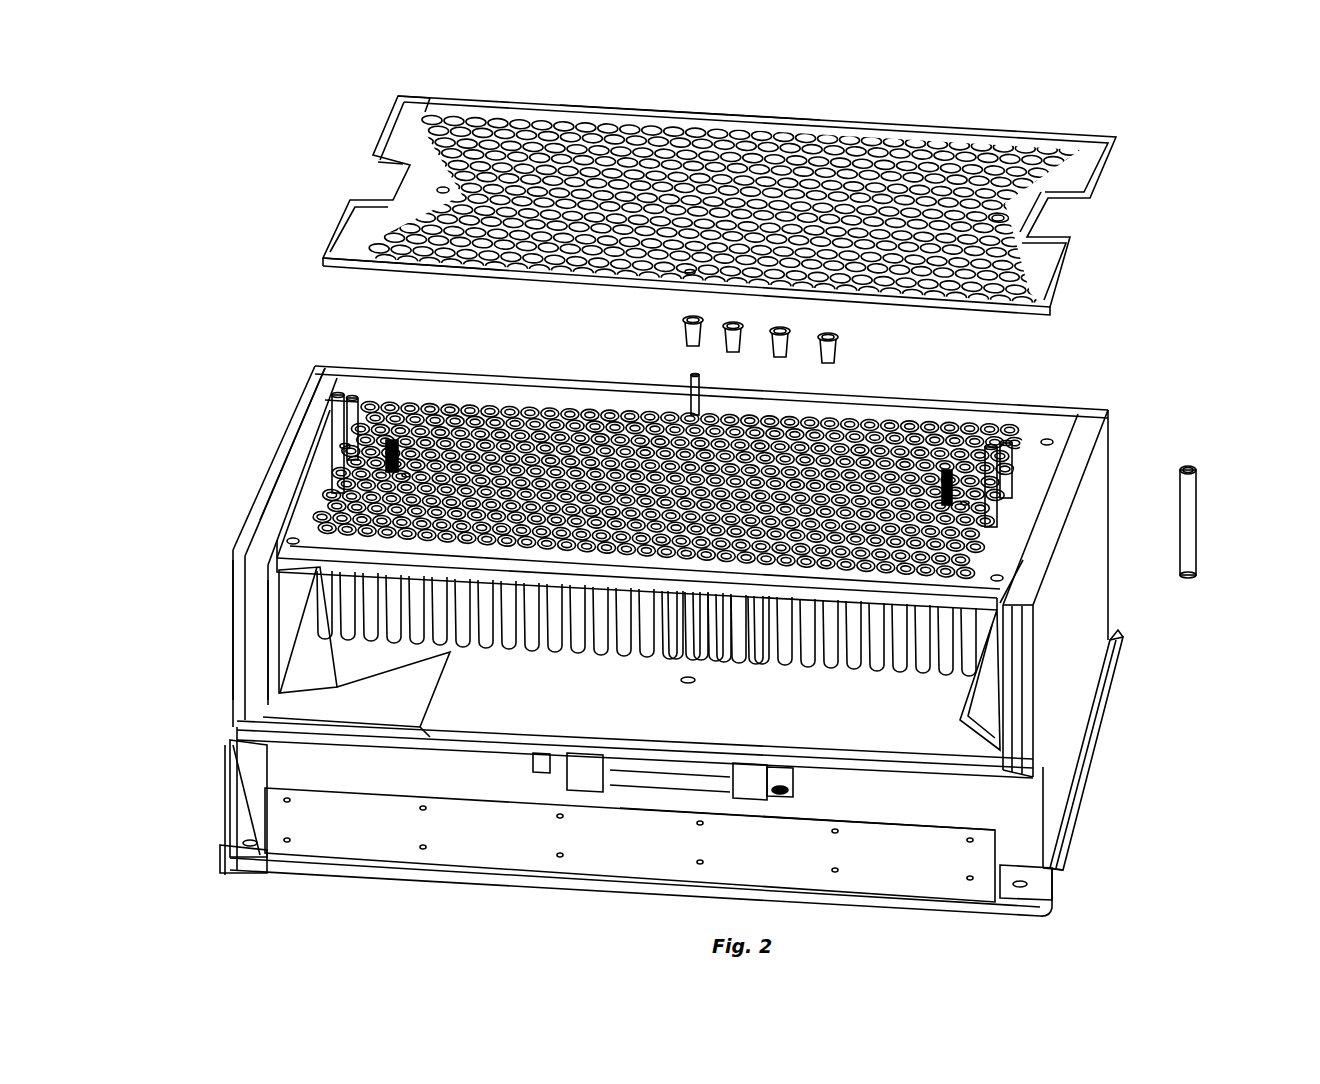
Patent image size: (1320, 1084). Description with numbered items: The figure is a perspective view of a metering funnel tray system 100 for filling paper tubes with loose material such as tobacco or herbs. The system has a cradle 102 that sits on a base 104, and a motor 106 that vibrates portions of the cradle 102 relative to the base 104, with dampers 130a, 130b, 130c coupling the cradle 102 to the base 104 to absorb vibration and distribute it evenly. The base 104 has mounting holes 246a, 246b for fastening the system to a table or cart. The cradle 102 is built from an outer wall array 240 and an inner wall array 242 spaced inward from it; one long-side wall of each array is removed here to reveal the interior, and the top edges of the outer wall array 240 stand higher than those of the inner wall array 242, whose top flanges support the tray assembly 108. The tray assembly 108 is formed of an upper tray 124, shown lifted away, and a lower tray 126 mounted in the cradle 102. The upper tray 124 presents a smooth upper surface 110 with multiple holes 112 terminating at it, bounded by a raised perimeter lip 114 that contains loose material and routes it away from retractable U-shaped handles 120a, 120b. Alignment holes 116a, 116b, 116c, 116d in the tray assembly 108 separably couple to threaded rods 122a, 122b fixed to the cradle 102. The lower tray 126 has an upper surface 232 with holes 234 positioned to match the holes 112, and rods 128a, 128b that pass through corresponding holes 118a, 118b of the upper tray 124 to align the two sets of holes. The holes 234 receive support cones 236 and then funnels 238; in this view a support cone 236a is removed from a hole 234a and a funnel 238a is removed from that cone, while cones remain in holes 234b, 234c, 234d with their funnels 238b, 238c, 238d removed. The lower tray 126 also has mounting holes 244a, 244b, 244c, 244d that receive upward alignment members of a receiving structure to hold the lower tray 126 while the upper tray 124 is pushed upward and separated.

The metering funnel tray system 100 is at (1085, 90).
The cradle 102 is at (230, 523).
The base 104 is at (1132, 802).
The motor 106 is at (518, 770).
The tray assembly 108 is at (322, 430).
The upper surface 110 is at (358, 248).
The holes 112 is at (766, 130).
The raised perimeter lip 114 is at (628, 108).
The hole 116a is at (437, 183).
The hole 116b is at (1008, 207).
The hole 116c is at (406, 468).
The hole 116d is at (966, 496).
The hole 118a is at (736, 132).
The hole 118b is at (684, 265).
The retractable handle 120a is at (322, 432).
The retractable handle 120b is at (1002, 440).
The threaded rod 122a is at (388, 452).
The threaded rod 122b is at (958, 520).
The upper tray 124 is at (402, 110).
The lower tray 126 is at (316, 496).
The rod 128a is at (692, 400).
The rod 128b is at (640, 527).
The damper 130a is at (335, 760).
The damper 130b is at (950, 800).
The damper 130c is at (1077, 693).
The upper surface 232 is at (337, 442).
The holes 234 is at (623, 562).
The hole 234a is at (675, 562).
The hole 234b is at (700, 565).
The hole 234c is at (723, 567).
The hole 234d is at (756, 568).
The support cones 236 is at (802, 684).
The support cone 236a is at (1196, 500).
The funnels 238 is at (926, 588).
The funnel 238a is at (728, 324).
The funnel 238b is at (686, 320).
The funnel 238c is at (784, 328).
The funnel 238d is at (832, 342).
The outer wall array 240 is at (231, 608).
The inner wall array 242 is at (260, 661).
The mounting hole 244a is at (340, 438).
The mounting hole 244b is at (1049, 440).
The mounting hole 244c is at (1003, 578).
The mounting hole 244d is at (290, 541).
The mounting hole 246a is at (246, 843).
The mounting hole 246b is at (1026, 884).